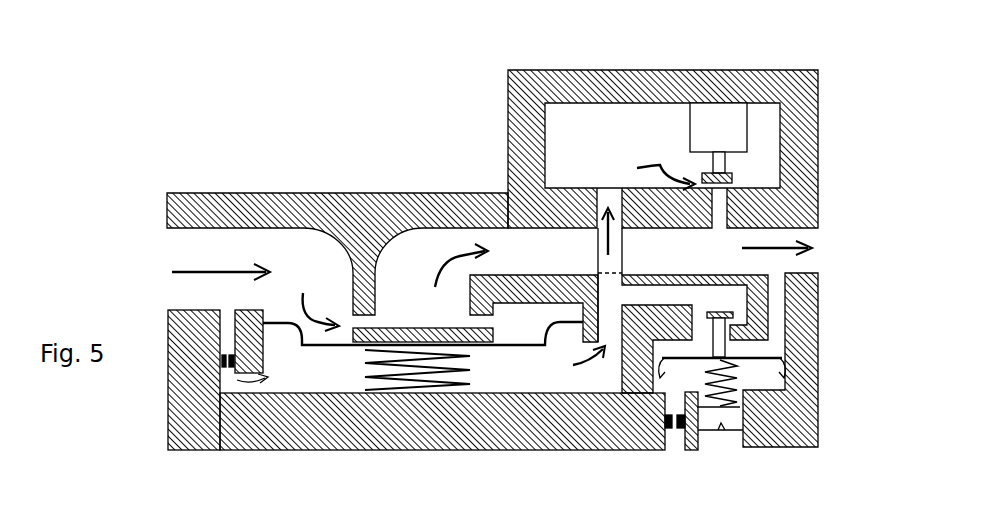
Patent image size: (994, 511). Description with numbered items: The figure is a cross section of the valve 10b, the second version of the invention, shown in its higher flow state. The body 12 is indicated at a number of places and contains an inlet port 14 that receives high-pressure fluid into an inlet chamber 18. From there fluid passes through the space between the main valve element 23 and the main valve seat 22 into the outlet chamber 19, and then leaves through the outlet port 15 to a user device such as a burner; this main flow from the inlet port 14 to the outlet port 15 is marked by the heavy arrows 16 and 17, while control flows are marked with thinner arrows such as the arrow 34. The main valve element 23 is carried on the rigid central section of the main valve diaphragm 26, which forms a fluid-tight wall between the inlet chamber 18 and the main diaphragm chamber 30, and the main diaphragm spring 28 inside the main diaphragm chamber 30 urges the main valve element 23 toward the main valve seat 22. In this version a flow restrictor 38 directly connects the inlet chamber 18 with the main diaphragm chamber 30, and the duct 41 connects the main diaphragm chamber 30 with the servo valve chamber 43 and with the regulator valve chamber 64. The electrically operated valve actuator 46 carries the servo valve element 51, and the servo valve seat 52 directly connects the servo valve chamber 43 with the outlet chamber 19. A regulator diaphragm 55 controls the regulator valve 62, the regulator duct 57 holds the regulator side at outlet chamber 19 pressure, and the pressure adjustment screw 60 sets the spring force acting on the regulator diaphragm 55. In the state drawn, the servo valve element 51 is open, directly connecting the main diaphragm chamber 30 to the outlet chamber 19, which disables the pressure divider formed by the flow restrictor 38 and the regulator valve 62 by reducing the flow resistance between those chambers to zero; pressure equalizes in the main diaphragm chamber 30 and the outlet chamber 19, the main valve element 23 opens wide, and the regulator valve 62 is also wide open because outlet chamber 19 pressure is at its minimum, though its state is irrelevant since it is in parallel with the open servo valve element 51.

The valve 10b is at (497, 174).
The body 12 is at (283, 193).
The inlet port 14 is at (177, 262).
The outlet port 15 is at (815, 258).
The heavy arrow 16 is at (195, 273).
The heavy arrow 17 is at (433, 293).
The inlet chamber 18 is at (238, 247).
The outlet chamber 19 is at (432, 238).
The main valve seat 22 is at (470, 317).
The main valve element 23 is at (475, 347).
The main valve diaphragm 26 is at (518, 347).
The main diaphragm spring 28 is at (373, 373).
The main diaphragm chamber 30 is at (293, 383).
The arrow 34 is at (650, 177).
The flow restrictor 38 is at (222, 362).
The duct 41 is at (622, 258).
The servo valve chamber 43 is at (633, 128).
The valve actuator 46 is at (730, 130).
The servo valve element 51 is at (730, 177).
The servo valve seat 52 is at (728, 184).
The regulator diaphragm 55 is at (800, 387).
The regulator duct 57 is at (782, 325).
The pressure adjustment screw 60 is at (738, 430).
The regulator valve 62 is at (770, 338).
The regulator valve chamber 64 is at (716, 300).